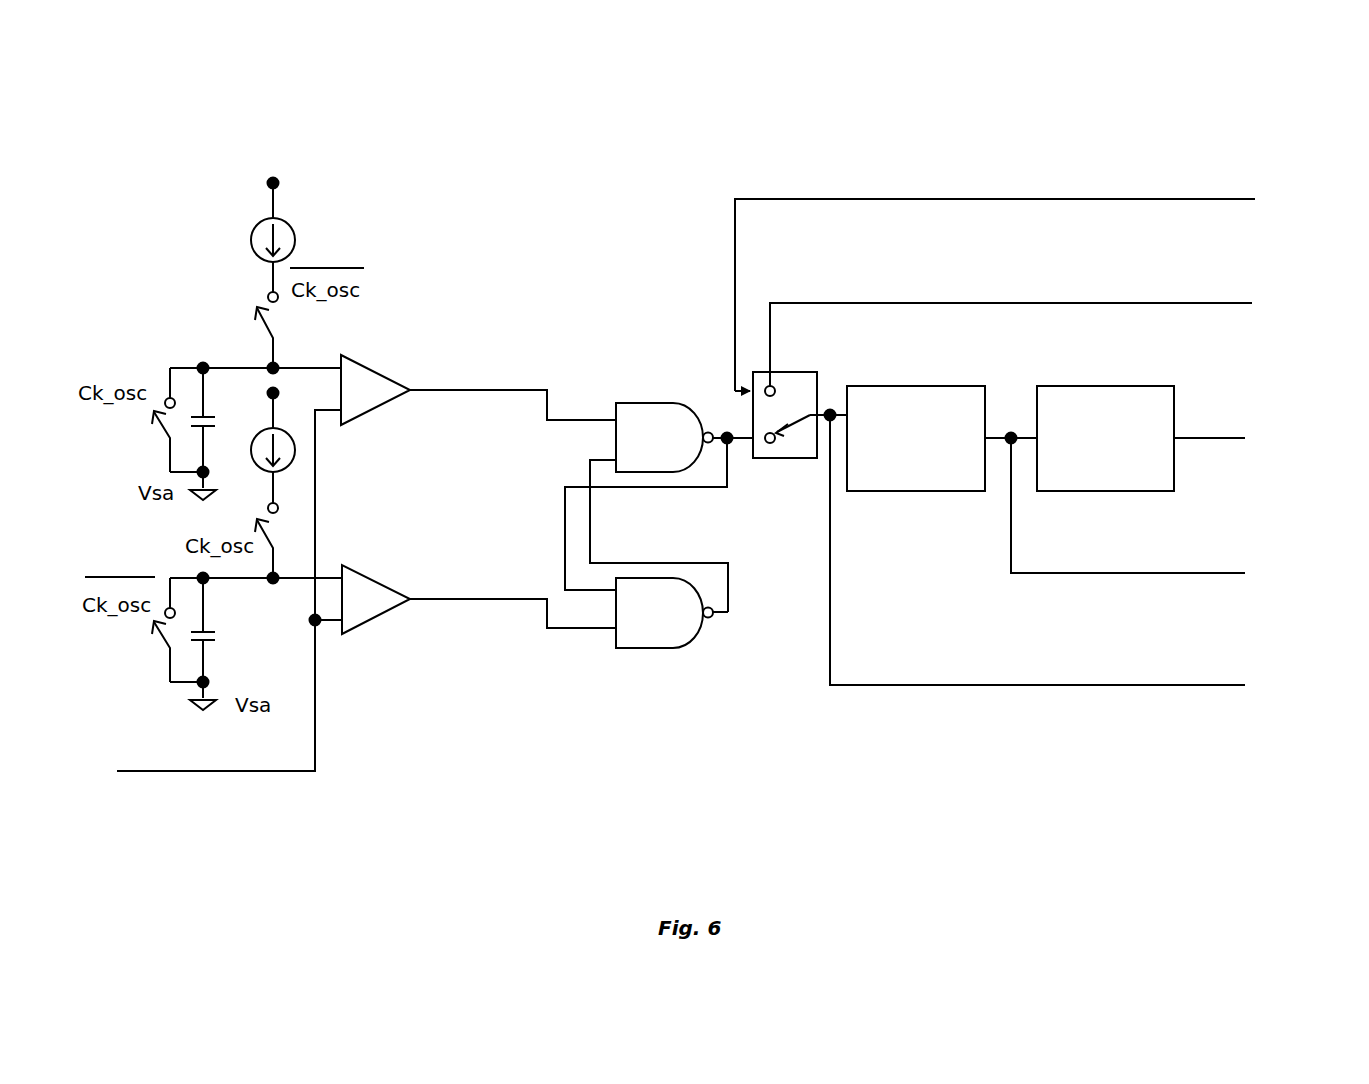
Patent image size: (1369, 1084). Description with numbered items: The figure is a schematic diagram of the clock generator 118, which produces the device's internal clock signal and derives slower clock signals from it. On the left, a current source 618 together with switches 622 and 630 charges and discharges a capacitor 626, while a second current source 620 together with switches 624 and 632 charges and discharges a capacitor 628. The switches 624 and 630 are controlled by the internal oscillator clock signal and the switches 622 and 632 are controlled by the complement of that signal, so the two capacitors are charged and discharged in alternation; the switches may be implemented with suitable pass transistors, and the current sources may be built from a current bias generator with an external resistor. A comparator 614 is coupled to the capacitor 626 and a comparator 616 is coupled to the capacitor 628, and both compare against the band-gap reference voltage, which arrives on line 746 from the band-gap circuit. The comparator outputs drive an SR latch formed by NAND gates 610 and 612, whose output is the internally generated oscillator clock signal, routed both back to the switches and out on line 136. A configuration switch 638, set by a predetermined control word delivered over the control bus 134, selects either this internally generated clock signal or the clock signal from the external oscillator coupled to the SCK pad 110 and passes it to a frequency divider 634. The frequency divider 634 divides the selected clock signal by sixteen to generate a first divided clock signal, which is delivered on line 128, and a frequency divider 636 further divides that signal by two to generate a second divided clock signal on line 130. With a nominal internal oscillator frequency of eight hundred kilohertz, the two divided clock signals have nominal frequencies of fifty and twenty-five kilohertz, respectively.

The clock generator 118 is at (150, 216).
The NAND gate 610 is at (671, 507).
The NAND gate 612 is at (646, 543).
The comparator 614 is at (478, 390).
The comparator 616 is at (479, 600).
The current source 618 is at (258, 235).
The current source 620 is at (258, 446).
The switch 622 is at (253, 330).
The switch 624 is at (284, 540).
The capacitor 626 is at (220, 434).
The capacitor 628 is at (221, 644).
The switch 630 is at (160, 420).
The switch 632 is at (160, 630).
The frequency divider 634 is at (931, 438).
The frequency divider 636 is at (1090, 438).
The configuration switch 638 is at (768, 459).
The control bus 134 is at (1039, 278).
The SCK pad 110 is at (1054, 326).
The line 130 is at (1256, 445).
The line 128 is at (1175, 527).
The line 136 is at (1084, 581).
The line 746 is at (201, 620).